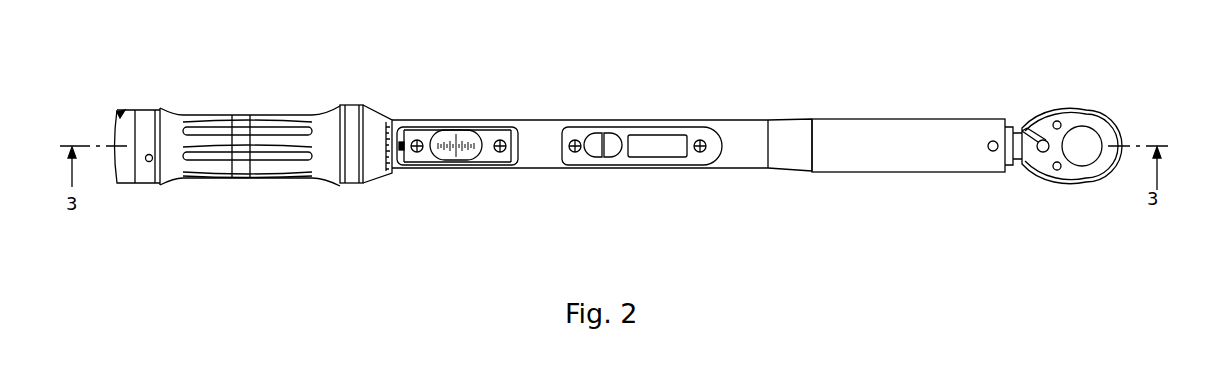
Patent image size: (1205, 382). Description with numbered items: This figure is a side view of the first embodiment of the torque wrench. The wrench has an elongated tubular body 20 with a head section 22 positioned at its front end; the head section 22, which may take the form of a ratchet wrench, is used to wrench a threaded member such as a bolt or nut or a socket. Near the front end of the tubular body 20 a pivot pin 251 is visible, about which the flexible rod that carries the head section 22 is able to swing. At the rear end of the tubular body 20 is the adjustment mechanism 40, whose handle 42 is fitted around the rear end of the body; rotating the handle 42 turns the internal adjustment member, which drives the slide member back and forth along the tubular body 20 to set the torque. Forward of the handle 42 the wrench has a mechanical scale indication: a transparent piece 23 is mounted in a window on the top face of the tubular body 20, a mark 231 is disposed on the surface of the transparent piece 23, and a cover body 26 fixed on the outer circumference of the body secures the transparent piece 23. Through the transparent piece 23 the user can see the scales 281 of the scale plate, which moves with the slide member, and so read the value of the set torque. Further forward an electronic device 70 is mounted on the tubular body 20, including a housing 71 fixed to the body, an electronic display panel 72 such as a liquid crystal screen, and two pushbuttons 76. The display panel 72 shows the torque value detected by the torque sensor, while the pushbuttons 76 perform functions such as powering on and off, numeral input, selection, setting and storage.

The adjustment mechanism 40 is at (295, 101).
The handle 42 is at (211, 167).
The transparent piece 23 is at (479, 129).
The mark 231 is at (447, 128).
The scales 281 is at (450, 158).
The cover body 26 is at (499, 131).
The electronic device 70 is at (636, 127).
The housing 71 is at (706, 129).
The electronic display panel 72 is at (667, 144).
The pushbutton 76 is at (591, 160).
The tubular body 20 is at (915, 157).
The pivot pin 251 is at (990, 151).
The head section 22 is at (1066, 182).